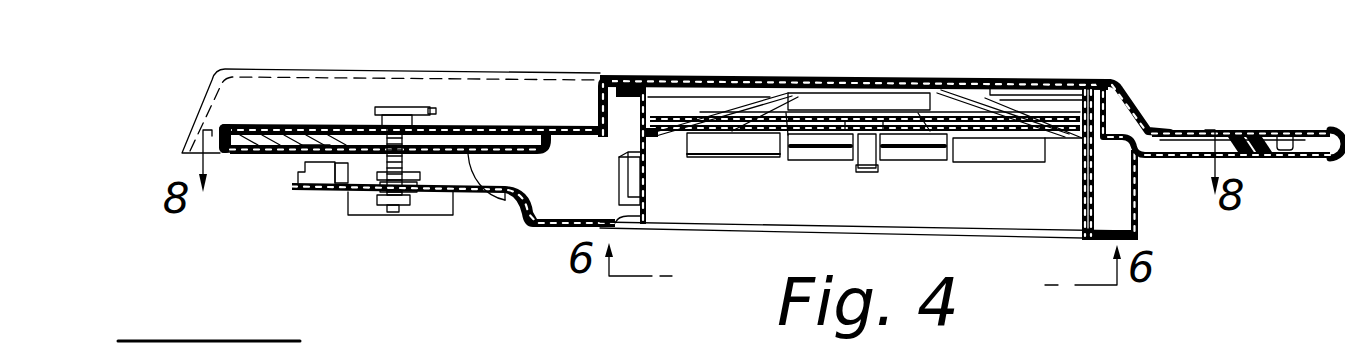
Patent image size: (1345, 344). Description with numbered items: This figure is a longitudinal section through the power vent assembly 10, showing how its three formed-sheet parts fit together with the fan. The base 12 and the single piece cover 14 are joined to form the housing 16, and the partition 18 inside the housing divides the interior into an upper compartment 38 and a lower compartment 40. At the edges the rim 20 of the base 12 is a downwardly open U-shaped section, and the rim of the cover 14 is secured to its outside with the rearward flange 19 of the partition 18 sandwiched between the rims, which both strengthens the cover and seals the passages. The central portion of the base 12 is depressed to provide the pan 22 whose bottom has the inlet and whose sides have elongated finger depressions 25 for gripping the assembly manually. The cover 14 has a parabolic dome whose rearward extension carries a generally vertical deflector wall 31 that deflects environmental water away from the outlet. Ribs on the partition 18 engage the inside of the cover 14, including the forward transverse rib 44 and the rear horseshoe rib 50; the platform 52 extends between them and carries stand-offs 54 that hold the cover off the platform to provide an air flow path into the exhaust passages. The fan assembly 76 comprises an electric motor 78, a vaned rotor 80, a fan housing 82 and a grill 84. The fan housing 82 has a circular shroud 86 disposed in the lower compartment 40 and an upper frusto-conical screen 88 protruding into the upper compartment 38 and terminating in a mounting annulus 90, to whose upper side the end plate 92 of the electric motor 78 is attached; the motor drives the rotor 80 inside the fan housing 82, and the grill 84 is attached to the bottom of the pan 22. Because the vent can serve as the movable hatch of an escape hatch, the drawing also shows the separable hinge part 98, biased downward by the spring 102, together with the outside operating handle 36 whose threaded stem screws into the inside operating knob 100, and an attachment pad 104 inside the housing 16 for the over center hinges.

The vent assembly 10 is at (1177, 82).
The base 12 is at (540, 227).
The cover 14 is at (1225, 130).
The housing 16 is at (478, 209).
The partition 18 is at (530, 155).
The rearward flange 19 is at (226, 150).
The rim 20 is at (251, 140).
The pan 22 is at (520, 203).
The finger depressions 25 is at (637, 205).
The deflector wall 31 is at (204, 105).
The operating handle 36 is at (398, 107).
The upper compartment 38 is at (738, 91).
The lower compartment 40 is at (583, 207).
The forward transverse rib 44 is at (1105, 92).
The rear horseshoe rib 50 is at (623, 78).
The platform 52 is at (1060, 99).
The stand-offs 54 is at (690, 88).
The fan assembly 76 is at (768, 233).
The electric motor 78 is at (880, 100).
The vaned rotor 80 is at (728, 157).
The fan housing 82 is at (1094, 182).
The grill 84 is at (1078, 240).
The shroud 86 is at (1022, 208).
The screen 88 is at (777, 93).
The mounting annulus 90 is at (937, 93).
The end plate 92 is at (858, 82).
The hinge part 98 is at (423, 187).
The inside operating knob 100 is at (398, 208).
The spring 102 is at (372, 165).
The attachment pads 104 is at (313, 142).